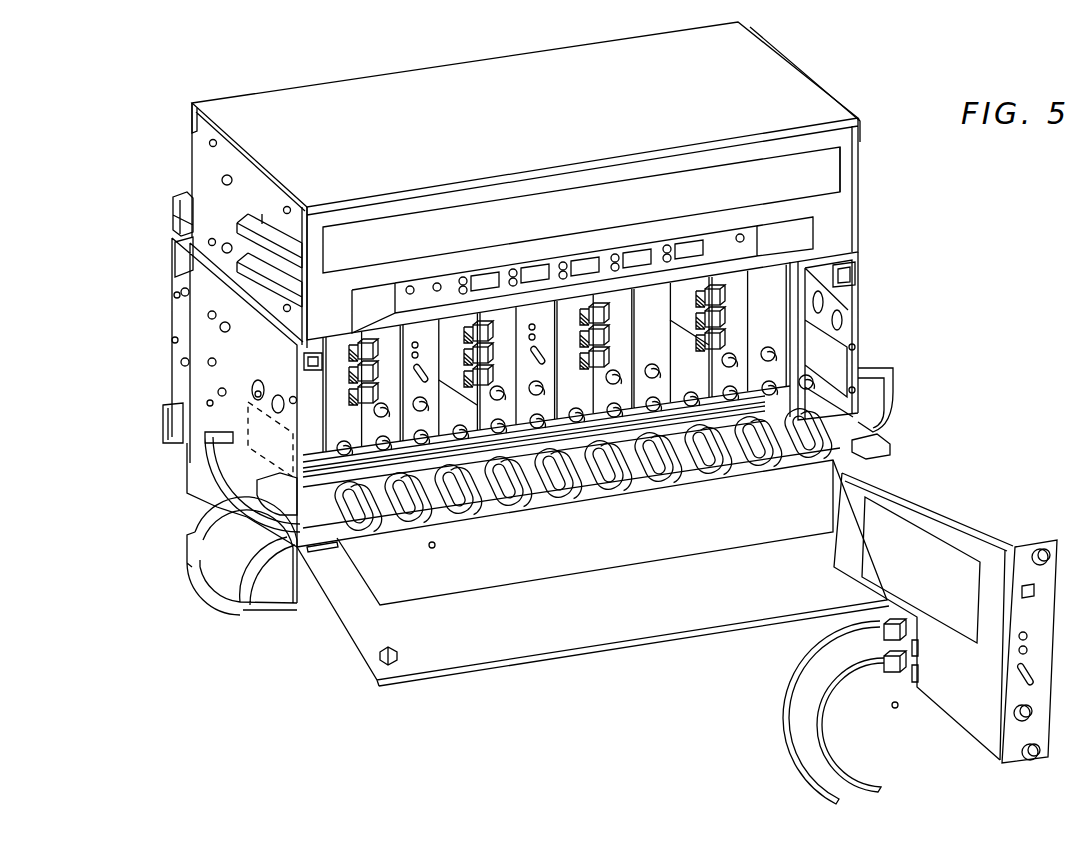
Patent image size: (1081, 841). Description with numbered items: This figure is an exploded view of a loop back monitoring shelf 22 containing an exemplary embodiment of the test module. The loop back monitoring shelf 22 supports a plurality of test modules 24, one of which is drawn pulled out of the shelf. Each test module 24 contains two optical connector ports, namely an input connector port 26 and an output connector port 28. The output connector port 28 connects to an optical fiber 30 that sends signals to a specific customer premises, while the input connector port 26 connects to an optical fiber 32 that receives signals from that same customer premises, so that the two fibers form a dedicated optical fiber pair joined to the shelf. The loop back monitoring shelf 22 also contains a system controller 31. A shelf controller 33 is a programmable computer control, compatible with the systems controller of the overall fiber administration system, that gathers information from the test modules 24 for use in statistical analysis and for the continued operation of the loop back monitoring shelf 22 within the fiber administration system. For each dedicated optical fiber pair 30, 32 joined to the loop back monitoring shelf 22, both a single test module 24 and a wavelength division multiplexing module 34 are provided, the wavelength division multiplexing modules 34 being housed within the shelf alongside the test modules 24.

The loop back monitoring shelf 22 is at (838, 64).
The test module 24 is at (945, 714).
The input connector port 26 is at (912, 628).
The output connector port 28 is at (910, 676).
The optical fiber 30 is at (866, 774).
The system controller 31 is at (263, 228).
The optical fiber 32 is at (793, 777).
The shelf controller 33 is at (237, 223).
The wavelength division multiplexing module 34 is at (700, 367).